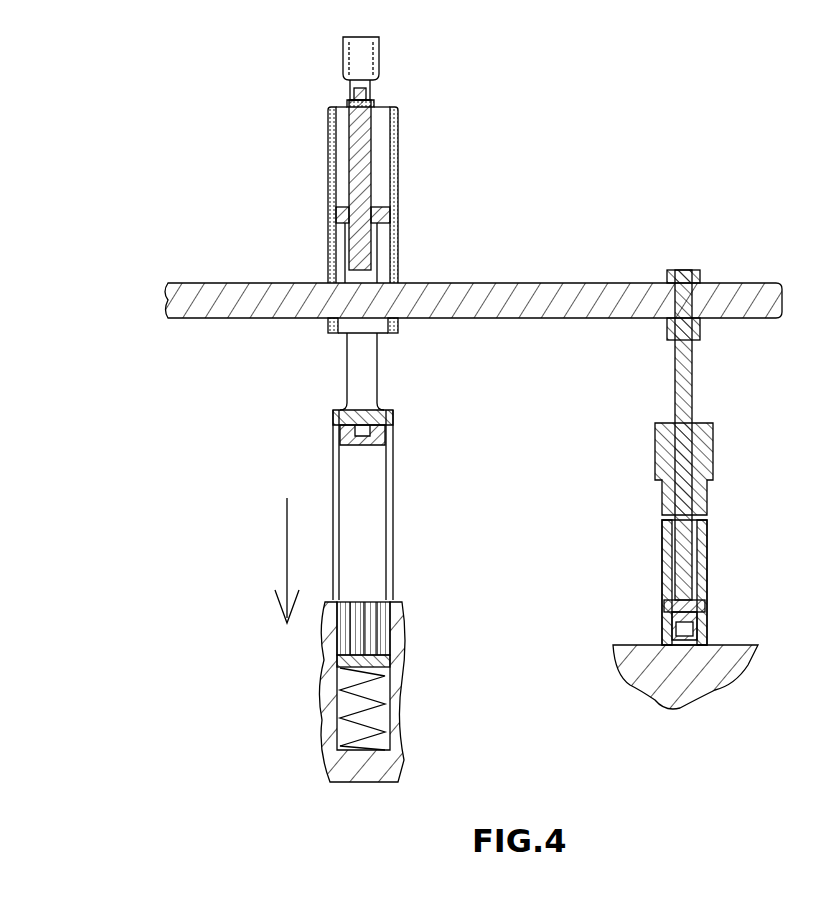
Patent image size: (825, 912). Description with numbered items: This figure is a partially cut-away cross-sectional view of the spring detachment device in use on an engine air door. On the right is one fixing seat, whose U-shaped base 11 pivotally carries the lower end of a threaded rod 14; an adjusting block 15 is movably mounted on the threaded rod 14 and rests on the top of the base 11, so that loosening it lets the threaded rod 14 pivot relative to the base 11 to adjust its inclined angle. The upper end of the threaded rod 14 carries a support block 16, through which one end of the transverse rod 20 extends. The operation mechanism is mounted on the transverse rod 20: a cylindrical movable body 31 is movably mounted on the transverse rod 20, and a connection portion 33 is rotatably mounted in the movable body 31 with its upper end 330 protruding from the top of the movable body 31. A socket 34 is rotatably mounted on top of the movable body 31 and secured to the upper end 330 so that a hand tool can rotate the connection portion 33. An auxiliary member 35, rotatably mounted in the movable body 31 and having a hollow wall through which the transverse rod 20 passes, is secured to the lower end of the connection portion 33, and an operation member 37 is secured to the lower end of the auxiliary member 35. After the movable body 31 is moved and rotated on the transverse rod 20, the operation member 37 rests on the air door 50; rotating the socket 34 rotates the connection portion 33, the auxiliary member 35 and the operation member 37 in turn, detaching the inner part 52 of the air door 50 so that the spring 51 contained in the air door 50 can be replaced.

The transverse rod 20 is at (612, 282).
The socket 34 is at (378, 62).
The upper end of connection portion 330 is at (349, 100).
The movable body 31 is at (396, 198).
The connection portion 33 is at (355, 165).
The auxiliary member 35 is at (368, 360).
The operation member 37 is at (388, 535).
The air door 50 is at (397, 630).
The inner part of air door 52 is at (387, 658).
The spring 51 is at (397, 720).
The support block 16 is at (700, 332).
The threaded rod 14 is at (692, 403).
The adjusting block 15 is at (713, 463).
The base 11 is at (707, 573).